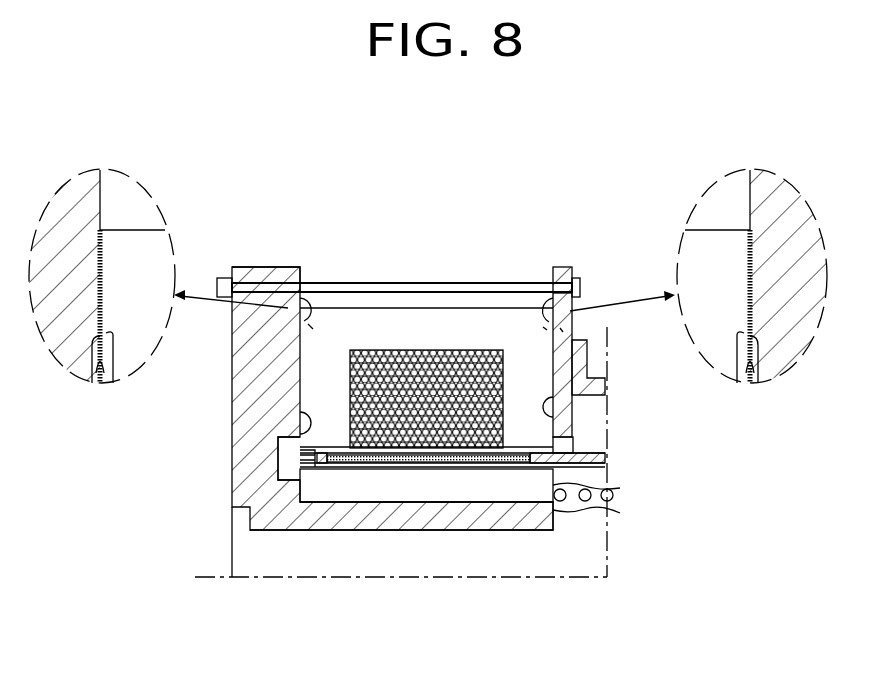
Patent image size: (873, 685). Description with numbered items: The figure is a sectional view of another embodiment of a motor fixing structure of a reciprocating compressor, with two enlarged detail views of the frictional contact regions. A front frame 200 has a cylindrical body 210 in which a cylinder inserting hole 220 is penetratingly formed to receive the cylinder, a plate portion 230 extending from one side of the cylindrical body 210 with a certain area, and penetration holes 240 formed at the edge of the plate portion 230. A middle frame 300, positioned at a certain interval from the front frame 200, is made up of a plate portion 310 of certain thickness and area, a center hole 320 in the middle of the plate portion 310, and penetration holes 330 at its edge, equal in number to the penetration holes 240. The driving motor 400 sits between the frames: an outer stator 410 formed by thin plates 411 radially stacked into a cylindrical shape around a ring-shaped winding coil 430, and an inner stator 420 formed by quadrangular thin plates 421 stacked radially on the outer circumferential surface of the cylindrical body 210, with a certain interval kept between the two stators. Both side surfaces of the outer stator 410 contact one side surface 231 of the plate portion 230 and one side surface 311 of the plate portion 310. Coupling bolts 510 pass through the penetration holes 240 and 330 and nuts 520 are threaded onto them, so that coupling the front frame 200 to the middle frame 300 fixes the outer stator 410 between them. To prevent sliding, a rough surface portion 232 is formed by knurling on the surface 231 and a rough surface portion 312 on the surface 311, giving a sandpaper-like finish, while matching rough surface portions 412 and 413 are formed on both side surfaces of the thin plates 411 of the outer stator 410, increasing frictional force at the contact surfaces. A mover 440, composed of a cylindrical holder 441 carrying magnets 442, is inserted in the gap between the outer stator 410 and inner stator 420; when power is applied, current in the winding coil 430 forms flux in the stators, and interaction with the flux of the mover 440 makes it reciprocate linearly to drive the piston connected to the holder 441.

The front frame 200 is at (410, 348).
The cylindrical body 210 is at (607, 518).
The cylinder inserting hole 220 is at (290, 531).
The plate portion 230 is at (253, 388).
The side surface 231 is at (104, 188).
The rough surface portion 232 is at (280, 441).
The penetration holes 240 is at (266, 283).
The middle frame 300 is at (610, 317).
The plate portion 310 is at (548, 332).
The side surface 311 is at (752, 187).
The rough surface portion 312 is at (573, 410).
The center hole 320 is at (573, 440).
The penetration holes 330 is at (552, 290).
The driving motor 400 is at (404, 337).
The outer stator 410 is at (388, 300).
The thin plates 411 is at (520, 327).
The rough surface portion 412 is at (92, 373).
The rough surface portion 413 is at (760, 373).
The inner stator 420 is at (483, 450).
The thin plates 421 is at (603, 490).
The winding coil 430 is at (422, 332).
The mover 440 is at (339, 438).
The holder 441 is at (577, 453).
The magnets 442 is at (367, 463).
The coupling bolts 510 is at (582, 287).
The nuts 520 is at (228, 280).